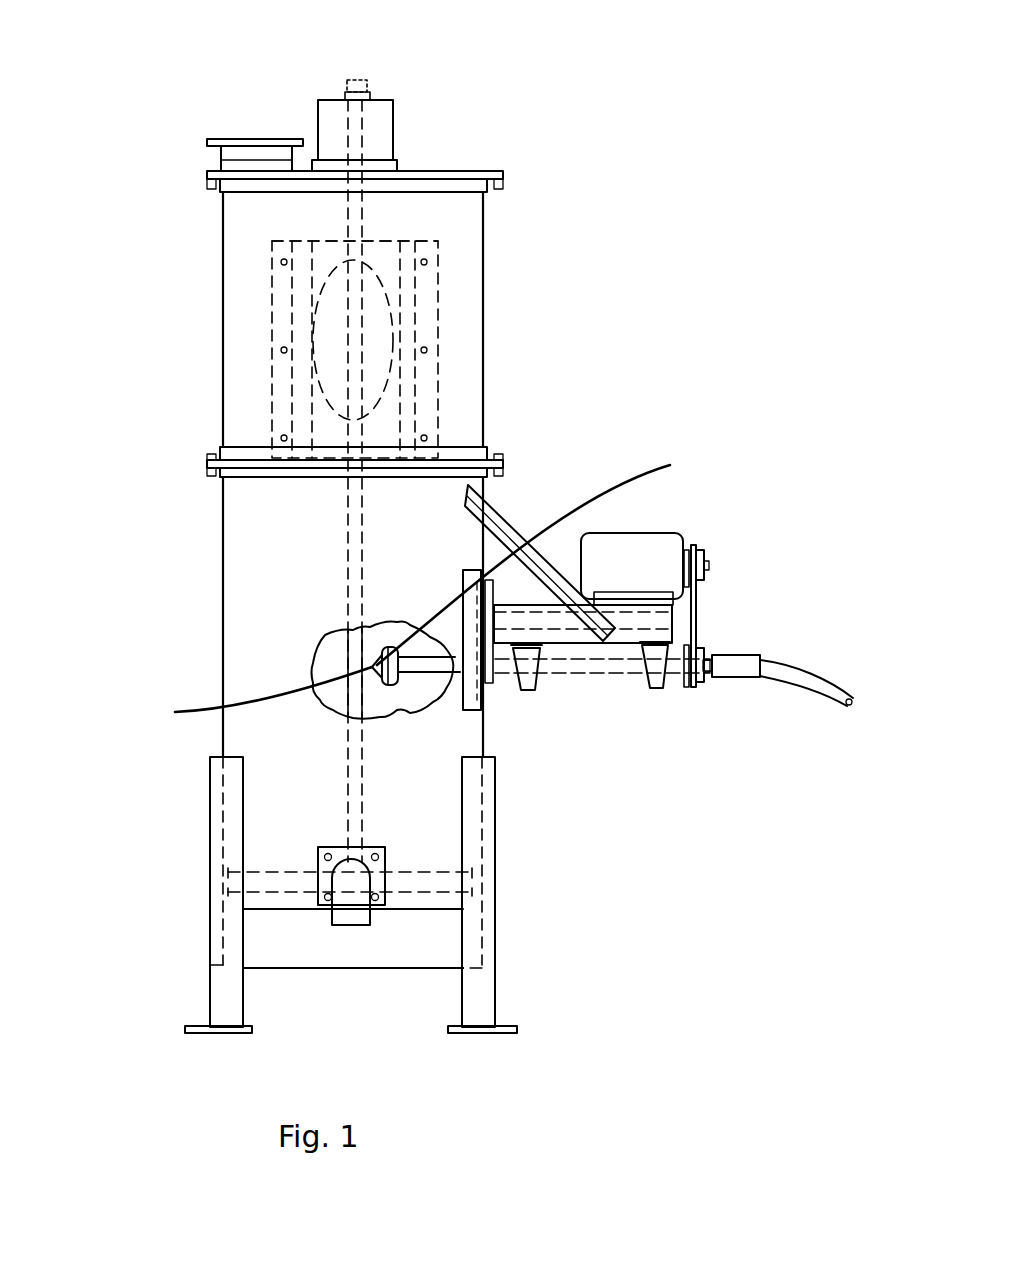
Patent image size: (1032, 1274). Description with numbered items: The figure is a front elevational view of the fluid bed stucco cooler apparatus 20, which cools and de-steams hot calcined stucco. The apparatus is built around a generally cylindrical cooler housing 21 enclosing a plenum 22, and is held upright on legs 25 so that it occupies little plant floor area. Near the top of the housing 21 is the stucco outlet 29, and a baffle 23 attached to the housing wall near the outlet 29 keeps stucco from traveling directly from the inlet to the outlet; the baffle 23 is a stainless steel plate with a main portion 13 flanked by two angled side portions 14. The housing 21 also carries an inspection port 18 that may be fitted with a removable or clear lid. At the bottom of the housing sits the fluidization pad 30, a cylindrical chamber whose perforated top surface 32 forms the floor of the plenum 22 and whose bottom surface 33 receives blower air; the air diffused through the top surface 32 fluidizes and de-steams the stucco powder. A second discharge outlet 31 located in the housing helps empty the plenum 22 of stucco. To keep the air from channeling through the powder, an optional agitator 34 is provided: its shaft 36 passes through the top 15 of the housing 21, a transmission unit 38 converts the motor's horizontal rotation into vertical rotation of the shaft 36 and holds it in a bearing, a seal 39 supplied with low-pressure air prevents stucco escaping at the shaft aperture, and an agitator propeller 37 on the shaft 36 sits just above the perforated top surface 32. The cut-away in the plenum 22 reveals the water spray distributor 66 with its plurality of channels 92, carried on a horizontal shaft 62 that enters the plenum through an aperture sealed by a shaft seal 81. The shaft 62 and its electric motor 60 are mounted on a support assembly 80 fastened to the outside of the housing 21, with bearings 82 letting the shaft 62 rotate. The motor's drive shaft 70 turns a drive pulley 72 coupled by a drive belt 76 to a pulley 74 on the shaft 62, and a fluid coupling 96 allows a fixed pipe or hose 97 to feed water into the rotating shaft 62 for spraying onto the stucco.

The stucco cooler apparatus 20 is at (547, 70).
The agitator 34 is at (390, 77).
The transmission unit 38 is at (393, 118).
The seal 39 is at (397, 165).
The shaft 36 is at (360, 217).
The top 15 is at (475, 171).
The inspection port 18 is at (220, 140).
The cooler housing 21 is at (467, 355).
The baffle 23 is at (297, 226).
The side portions 14 is at (300, 253).
The main portion 13 is at (400, 252).
The stucco outlet 29 is at (383, 342).
The spray distributor 66 is at (542, 556).
The shaft seal 81 is at (492, 682).
The motor 60 is at (625, 543).
The support assembly 80 is at (663, 620).
The shaft 62 is at (590, 670).
The bearings 82 is at (523, 685).
The drive belt 76 is at (695, 628).
The drive shaft 70 is at (706, 568).
The drive pulley 72 is at (700, 553).
The pulley 74 is at (697, 688).
The fluid coupling 96 is at (738, 661).
The pipe or hose 97 is at (807, 675).
The plenum 22 is at (326, 665).
The channels 92 is at (291, 695).
The agitator propeller 37 is at (260, 883).
The second discharge outlet 31 is at (340, 888).
The perforated top surface 32 is at (445, 908).
The fluidization pad 30 is at (440, 937).
The bottom surface 33 is at (377, 970).
The legs 25 is at (220, 993).